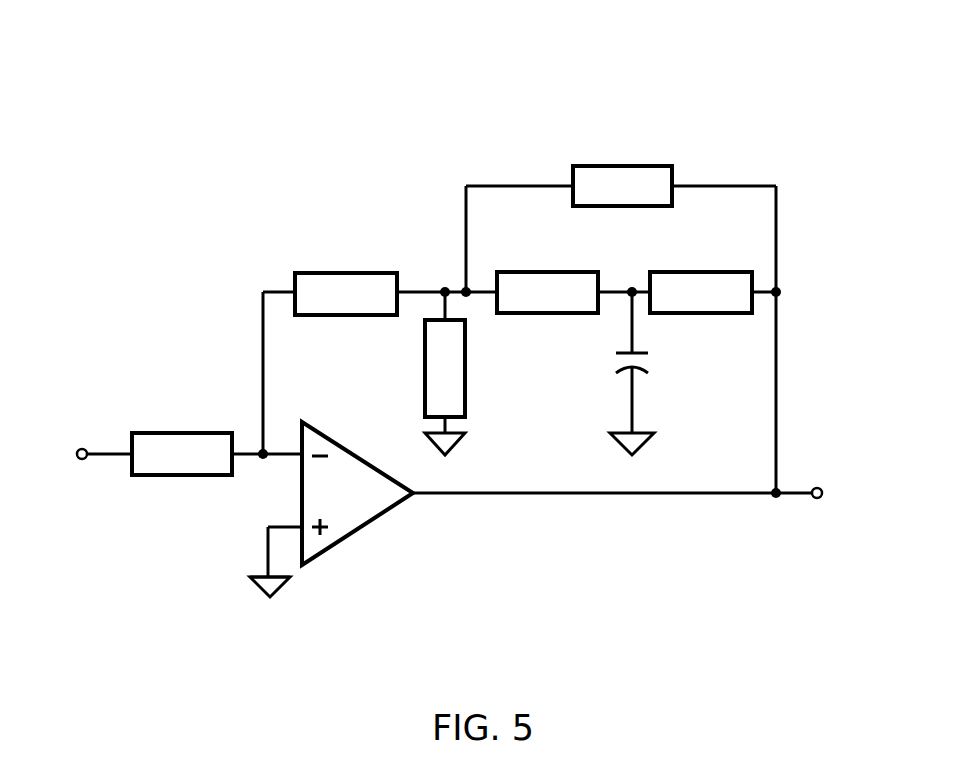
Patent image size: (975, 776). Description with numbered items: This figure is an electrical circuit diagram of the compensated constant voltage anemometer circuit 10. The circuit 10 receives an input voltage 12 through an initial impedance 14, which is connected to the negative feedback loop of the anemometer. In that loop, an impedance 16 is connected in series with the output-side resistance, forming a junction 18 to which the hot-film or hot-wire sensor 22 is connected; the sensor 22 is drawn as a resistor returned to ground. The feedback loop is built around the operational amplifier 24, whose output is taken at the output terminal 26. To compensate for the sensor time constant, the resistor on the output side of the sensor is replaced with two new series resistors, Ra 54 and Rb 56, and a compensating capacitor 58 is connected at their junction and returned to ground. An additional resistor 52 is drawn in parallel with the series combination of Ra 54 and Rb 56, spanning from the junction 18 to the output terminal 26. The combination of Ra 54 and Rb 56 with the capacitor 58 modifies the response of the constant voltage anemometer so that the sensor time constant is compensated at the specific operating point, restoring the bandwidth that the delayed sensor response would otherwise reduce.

The constant voltage anemometer circuit 10 is at (397, 106).
The input voltage 12 is at (39, 448).
The initial impedance 14 is at (170, 393).
The impedance 16 is at (332, 235).
The junction 18 is at (438, 248).
The hot-film or hot-wire sensor 22 is at (467, 392).
The operational amplifier 24 is at (342, 543).
The output terminal VS 26 is at (853, 472).
The resistor RD 52 is at (622, 130).
The resistor Ra 54 is at (548, 238).
The resistor Rb 56 is at (692, 237).
The compensating capacitor 58 is at (662, 383).